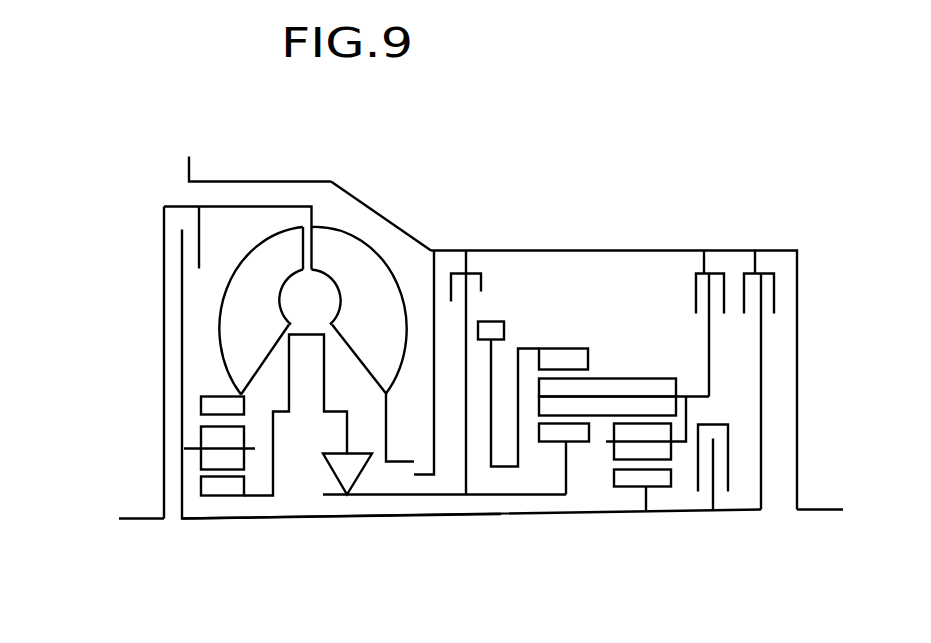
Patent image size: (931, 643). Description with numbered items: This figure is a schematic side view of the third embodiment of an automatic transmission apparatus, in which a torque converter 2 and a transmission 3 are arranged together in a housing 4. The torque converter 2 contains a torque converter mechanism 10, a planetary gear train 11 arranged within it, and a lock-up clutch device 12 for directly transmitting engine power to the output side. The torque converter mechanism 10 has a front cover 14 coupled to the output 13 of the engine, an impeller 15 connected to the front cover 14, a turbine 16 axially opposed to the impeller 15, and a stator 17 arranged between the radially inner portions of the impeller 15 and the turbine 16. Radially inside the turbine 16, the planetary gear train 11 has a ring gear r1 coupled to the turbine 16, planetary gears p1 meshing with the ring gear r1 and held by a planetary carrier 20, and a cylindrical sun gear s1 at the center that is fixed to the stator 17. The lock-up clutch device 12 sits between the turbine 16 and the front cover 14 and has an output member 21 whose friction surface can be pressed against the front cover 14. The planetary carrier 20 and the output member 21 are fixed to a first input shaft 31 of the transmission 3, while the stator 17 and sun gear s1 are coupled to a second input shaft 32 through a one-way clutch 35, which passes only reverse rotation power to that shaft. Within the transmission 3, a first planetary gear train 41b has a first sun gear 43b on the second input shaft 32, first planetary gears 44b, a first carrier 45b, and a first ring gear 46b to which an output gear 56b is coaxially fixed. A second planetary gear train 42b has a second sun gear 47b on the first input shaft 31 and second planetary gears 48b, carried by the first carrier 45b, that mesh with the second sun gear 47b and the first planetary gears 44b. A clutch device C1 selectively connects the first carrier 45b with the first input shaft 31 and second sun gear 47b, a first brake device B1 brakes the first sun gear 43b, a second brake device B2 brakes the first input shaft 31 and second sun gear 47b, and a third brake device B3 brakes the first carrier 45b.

The torque converter 2 is at (390, 192).
The transmission 3 is at (600, 247).
The housing 4 is at (345, 183).
The torque converter mechanism 10 is at (378, 256).
The planetary gear train 11 is at (218, 494).
The lock-up clutch device 12 is at (173, 237).
The output of the engine 13 is at (138, 515).
The front cover 14 is at (162, 210).
The impeller 15 is at (373, 375).
The turbine 16 is at (261, 341).
The stator 17 is at (309, 297).
The planetary carrier 20 is at (183, 455).
The output member 21 is at (185, 400).
The first input shaft 31 is at (348, 517).
The second input shaft 32 is at (380, 494).
The one-way clutch 35 is at (343, 490).
The first planetary gear train 41b is at (541, 447).
The second planetary gear train 42b is at (630, 487).
The first sun gear 43b is at (585, 441).
The first planetary gears 44b is at (583, 395).
The first carrier 45b is at (695, 393).
The first ring gear 46b is at (547, 357).
The second sun gear 47b is at (650, 478).
The second planetary gears 48b is at (653, 448).
The output gear 56b is at (483, 325).
The first brake device B1 is at (467, 273).
The second brake device B2 is at (753, 270).
The third brake device B3 is at (703, 270).
The clutch device C1 is at (717, 462).
The ring gear r1 is at (225, 402).
The planetary gears p1 is at (222, 458).
The sun gear s1 is at (205, 489).